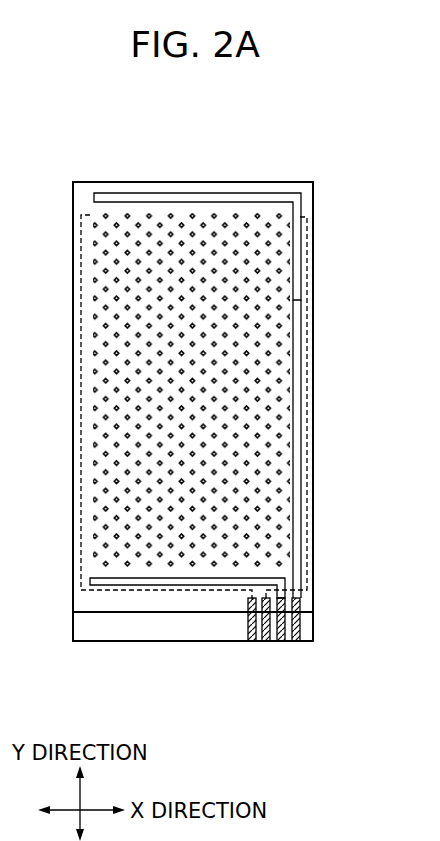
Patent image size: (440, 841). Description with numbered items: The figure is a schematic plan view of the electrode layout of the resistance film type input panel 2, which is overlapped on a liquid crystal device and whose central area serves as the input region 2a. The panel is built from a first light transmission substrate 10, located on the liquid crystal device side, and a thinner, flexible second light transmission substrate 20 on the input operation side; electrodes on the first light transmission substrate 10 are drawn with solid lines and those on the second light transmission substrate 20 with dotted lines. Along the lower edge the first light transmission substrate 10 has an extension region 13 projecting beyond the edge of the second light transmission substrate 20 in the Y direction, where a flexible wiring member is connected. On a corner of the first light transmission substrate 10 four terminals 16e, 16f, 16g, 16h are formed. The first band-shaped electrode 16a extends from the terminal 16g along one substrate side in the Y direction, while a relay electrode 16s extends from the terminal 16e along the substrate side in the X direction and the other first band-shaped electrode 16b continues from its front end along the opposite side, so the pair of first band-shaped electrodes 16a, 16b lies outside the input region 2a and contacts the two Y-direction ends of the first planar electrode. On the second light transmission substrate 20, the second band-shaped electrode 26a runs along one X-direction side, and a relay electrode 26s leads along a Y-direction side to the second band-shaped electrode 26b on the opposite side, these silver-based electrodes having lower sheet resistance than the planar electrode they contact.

The resistance film type input panel 2 is at (330, 181).
The input region 2a is at (293, 269).
The first light transmission substrate 10 is at (320, 629).
The extension region 13 is at (78, 628).
The first band-shaped electrode 16a is at (115, 580).
The first band-shaped electrode 16b is at (247, 200).
The relay electrode 16s is at (297, 358).
The terminal 16e is at (295, 641).
The terminal 16f is at (281, 641).
The terminal 16g is at (266, 641).
The terminal 16h is at (252, 641).
The second light transmission substrate 20 is at (320, 526).
The second band-shaped electrode 26a is at (307, 308).
The second band-shaped electrode 26b is at (80, 300).
The relay electrode 26s is at (160, 590).